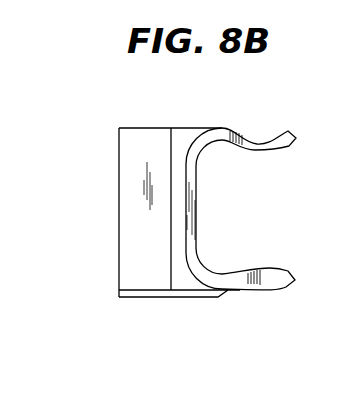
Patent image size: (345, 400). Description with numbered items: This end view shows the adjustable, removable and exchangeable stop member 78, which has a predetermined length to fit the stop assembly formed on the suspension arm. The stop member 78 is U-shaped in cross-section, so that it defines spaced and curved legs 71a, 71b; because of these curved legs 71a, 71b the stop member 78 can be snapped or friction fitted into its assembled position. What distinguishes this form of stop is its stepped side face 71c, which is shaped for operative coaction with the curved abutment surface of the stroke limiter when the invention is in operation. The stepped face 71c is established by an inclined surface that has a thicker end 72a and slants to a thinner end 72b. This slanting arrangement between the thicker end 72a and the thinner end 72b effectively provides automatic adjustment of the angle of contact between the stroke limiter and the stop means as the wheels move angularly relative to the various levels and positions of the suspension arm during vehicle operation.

The curved leg 71a is at (262, 134).
The curved leg 71b is at (263, 276).
The stepped side face 71c is at (154, 214).
The thicker end 72a is at (118, 155).
The thinner end 72b is at (190, 283).
The stop member 78 is at (227, 135).